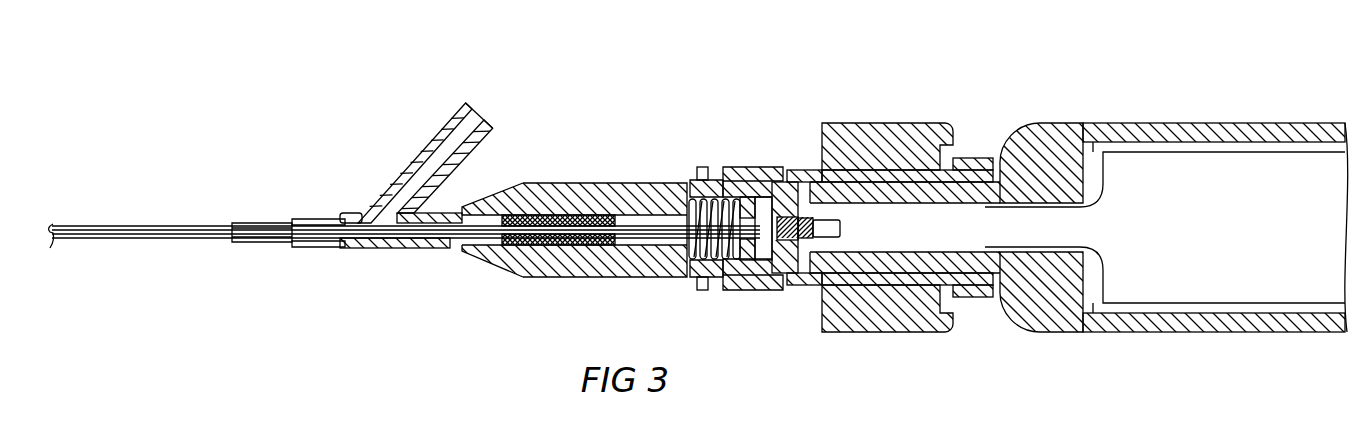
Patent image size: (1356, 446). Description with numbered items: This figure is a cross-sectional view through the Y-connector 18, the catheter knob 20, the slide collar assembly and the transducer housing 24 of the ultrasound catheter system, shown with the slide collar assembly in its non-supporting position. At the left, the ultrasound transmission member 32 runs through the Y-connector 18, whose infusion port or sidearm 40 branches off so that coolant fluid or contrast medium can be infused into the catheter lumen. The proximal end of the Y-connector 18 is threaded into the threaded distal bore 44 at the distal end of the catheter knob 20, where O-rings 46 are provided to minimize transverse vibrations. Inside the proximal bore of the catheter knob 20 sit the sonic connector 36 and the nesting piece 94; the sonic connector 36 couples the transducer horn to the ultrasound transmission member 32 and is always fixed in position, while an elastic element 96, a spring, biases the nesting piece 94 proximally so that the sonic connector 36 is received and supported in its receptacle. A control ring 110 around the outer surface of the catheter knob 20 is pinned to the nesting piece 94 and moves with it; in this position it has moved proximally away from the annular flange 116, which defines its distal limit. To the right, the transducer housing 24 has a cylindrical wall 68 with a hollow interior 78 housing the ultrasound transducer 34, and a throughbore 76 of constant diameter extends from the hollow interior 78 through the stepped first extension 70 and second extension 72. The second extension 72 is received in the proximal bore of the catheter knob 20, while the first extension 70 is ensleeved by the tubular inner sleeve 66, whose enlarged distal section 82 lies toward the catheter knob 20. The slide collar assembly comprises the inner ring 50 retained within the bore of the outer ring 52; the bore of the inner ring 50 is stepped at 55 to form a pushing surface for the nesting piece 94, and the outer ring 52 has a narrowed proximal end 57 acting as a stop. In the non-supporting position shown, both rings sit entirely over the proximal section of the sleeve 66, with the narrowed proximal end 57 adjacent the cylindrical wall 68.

The Y-connector 18 is at (373, 257).
The catheter knob 20 is at (540, 190).
The transducer housing 24 is at (1128, 119).
The ultrasound transmission member 32 is at (327, 227).
The ultrasound transducer 34 is at (1173, 170).
The sonic connector 36 is at (805, 220).
The infusion port or sidearm 40 is at (412, 157).
The threaded distal bore 44 is at (480, 210).
The O-rings 46 is at (520, 243).
The inner ring 50 is at (860, 150).
The outer ring 52 is at (928, 125).
The stepped portion of bore 55 is at (820, 155).
The narrowed proximal end 57 is at (972, 158).
The tubular inner sleeve 66 is at (975, 290).
The cylindrical wall 68 is at (1125, 335).
The first extension 70 is at (932, 260).
The second extension 72 is at (865, 270).
The throughbore 76 is at (1040, 173).
The hollow interior 78 is at (1093, 157).
The enlarged distal section 82 is at (800, 290).
The nesting piece 94 is at (782, 257).
The elastic element 96 is at (687, 197).
The control ring 110 is at (733, 170).
The annular flange 116 is at (705, 290).